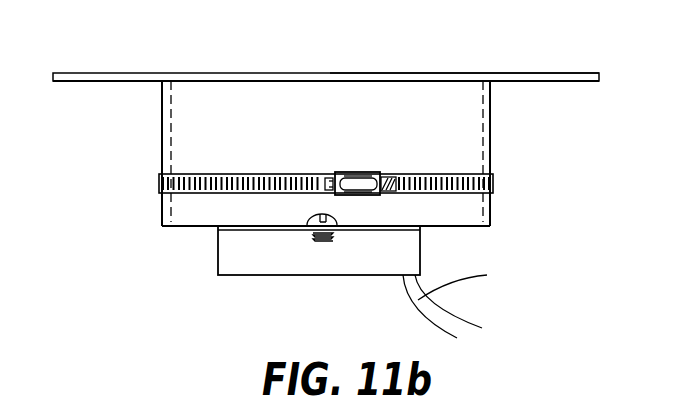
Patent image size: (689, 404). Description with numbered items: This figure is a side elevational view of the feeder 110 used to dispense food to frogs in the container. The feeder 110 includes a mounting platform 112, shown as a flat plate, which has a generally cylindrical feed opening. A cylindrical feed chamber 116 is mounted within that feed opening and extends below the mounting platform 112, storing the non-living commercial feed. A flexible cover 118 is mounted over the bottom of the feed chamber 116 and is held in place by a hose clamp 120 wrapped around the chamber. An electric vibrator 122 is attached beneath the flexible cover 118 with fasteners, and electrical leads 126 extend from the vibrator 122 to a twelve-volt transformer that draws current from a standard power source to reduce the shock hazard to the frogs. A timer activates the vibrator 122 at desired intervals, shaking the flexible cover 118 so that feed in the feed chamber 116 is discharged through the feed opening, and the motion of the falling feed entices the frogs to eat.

The feeder 110 is at (97, 73).
The mounting platform 112 is at (535, 80).
The cylindrical feed chamber 116 is at (490, 115).
The flexible cover 118 is at (491, 205).
The hose clamp 120 is at (477, 180).
The electric vibrator 122 is at (403, 246).
The electrical leads 126 is at (433, 312).